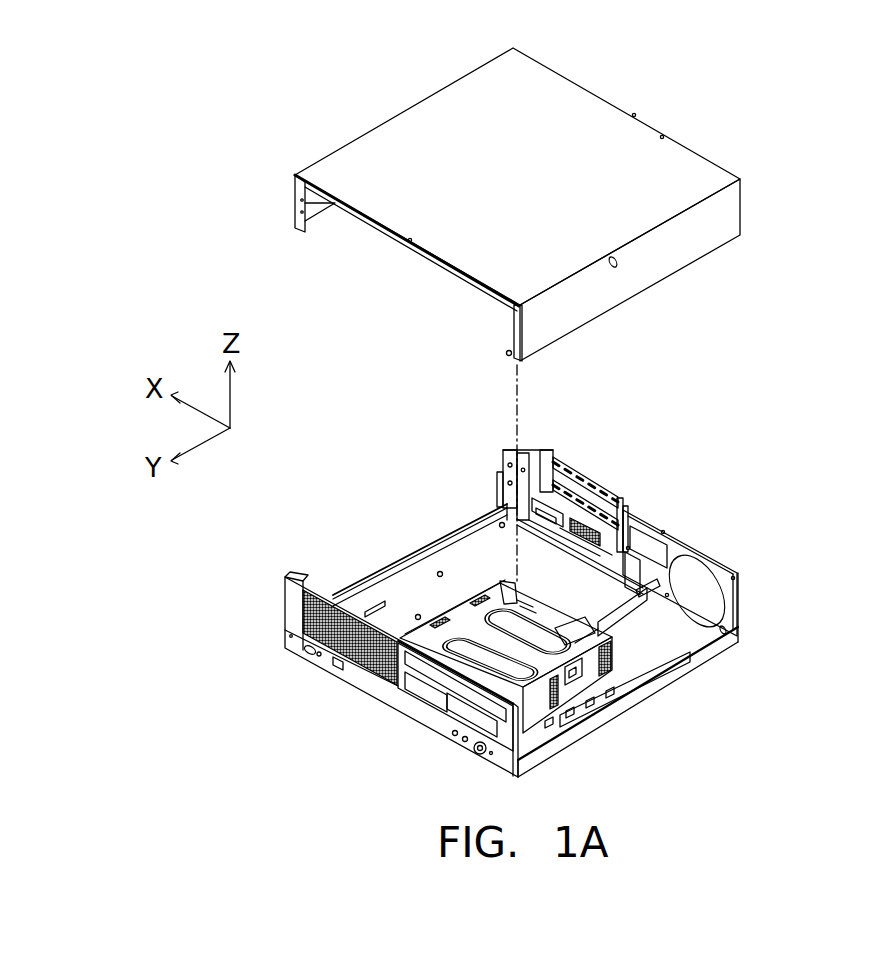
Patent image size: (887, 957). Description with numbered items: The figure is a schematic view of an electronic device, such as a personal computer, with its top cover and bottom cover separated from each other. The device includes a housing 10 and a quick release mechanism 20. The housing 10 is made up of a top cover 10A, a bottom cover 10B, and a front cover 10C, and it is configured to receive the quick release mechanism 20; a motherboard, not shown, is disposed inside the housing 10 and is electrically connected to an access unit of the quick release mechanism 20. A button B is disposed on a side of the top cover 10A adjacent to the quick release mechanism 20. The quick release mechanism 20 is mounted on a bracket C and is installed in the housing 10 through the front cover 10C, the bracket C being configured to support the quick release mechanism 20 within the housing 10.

The housing 10 is at (802, 372).
The top cover 10A is at (352, 163).
The bottom cover 10B is at (585, 723).
The front cover 10C is at (293, 604).
The quick release mechanism 20 is at (432, 672).
The button B is at (618, 267).
The bracket C is at (472, 615).